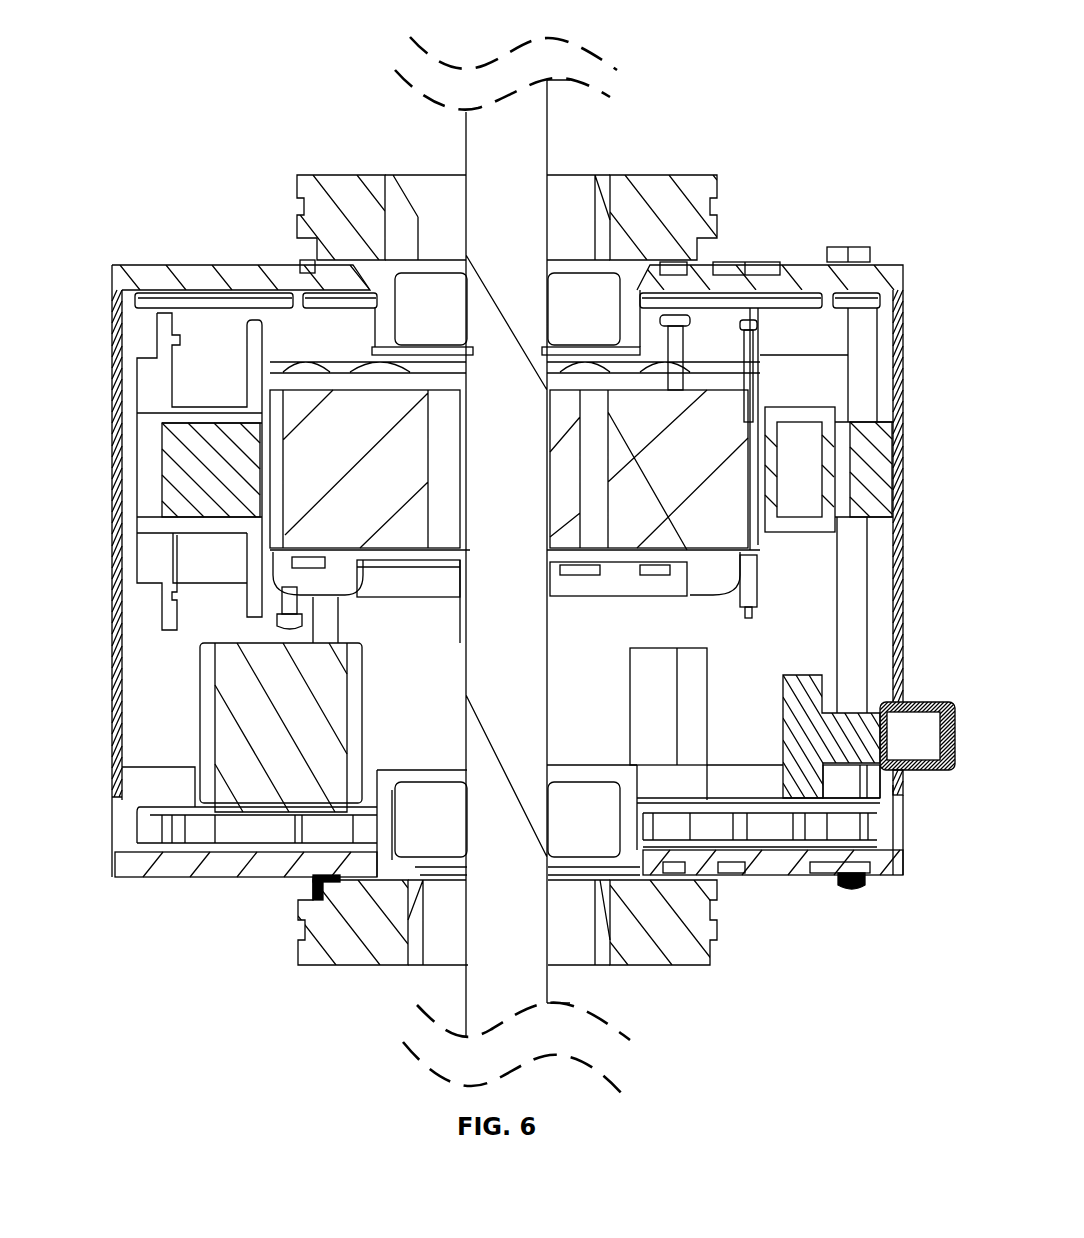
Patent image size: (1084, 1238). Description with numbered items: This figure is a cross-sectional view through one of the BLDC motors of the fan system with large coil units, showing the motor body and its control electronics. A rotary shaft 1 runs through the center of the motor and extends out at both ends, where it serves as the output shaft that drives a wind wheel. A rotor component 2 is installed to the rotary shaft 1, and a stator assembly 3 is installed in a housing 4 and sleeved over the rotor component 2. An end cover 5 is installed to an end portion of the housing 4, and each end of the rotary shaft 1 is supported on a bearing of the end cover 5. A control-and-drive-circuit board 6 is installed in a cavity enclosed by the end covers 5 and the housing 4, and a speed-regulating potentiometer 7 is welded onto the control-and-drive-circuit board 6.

The rotary shaft 1 is at (502, 250).
The rotor component 2 is at (668, 440).
The stator assembly 3 is at (812, 475).
The housing 4 is at (112, 398).
The end cover 5 is at (220, 288).
The control and drive circuit board 6 is at (185, 810).
The speed-regulating potentiometer 7 is at (807, 753).